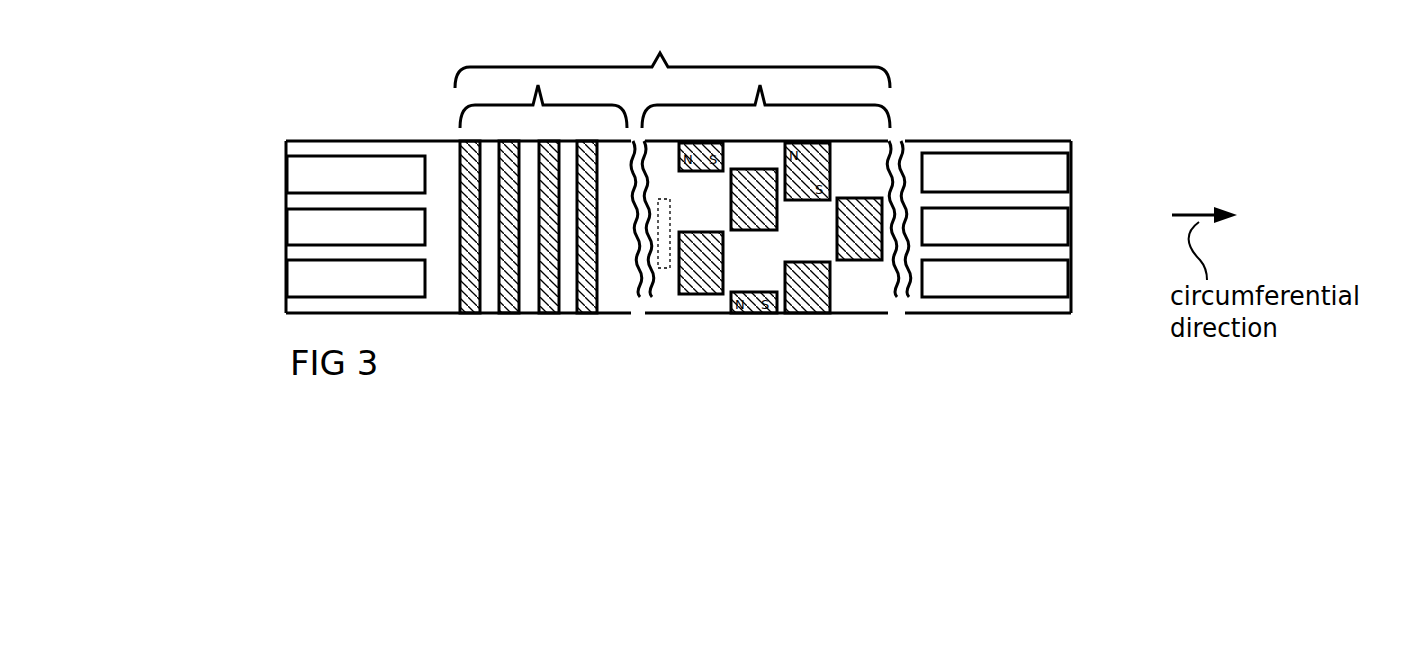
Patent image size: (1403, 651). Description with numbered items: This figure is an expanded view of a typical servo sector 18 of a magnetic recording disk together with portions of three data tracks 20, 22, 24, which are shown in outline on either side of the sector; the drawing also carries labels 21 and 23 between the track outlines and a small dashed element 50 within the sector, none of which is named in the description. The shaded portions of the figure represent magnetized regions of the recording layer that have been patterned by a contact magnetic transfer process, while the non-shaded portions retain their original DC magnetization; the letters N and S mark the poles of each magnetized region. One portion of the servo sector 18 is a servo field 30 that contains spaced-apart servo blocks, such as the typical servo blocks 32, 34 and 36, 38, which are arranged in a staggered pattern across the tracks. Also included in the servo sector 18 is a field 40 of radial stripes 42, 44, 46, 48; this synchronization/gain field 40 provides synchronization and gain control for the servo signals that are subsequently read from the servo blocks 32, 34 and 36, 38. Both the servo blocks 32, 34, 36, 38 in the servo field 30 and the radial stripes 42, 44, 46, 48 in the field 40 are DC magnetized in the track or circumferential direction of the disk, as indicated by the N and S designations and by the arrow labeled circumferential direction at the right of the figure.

The servo sector 18 is at (672, 58).
The data track 20 is at (302, 173).
The first gap 21 is at (302, 203).
The data track 22 is at (302, 228).
The second gap 23 is at (298, 253).
The data track 24 is at (302, 283).
The servo field 30 is at (766, 100).
The servo block 32 is at (705, 295).
The servo block 34 is at (758, 231).
The servo block 36 is at (823, 313).
The servo block 38 is at (868, 261).
The synchronization/gain field 40 is at (543, 100).
The radial stripe 42 is at (467, 313).
The radial stripe 44 is at (503, 313).
The radial stripe 46 is at (543, 313).
The radial stripe 48 is at (583, 313).
The sensor element 50 is at (665, 238).